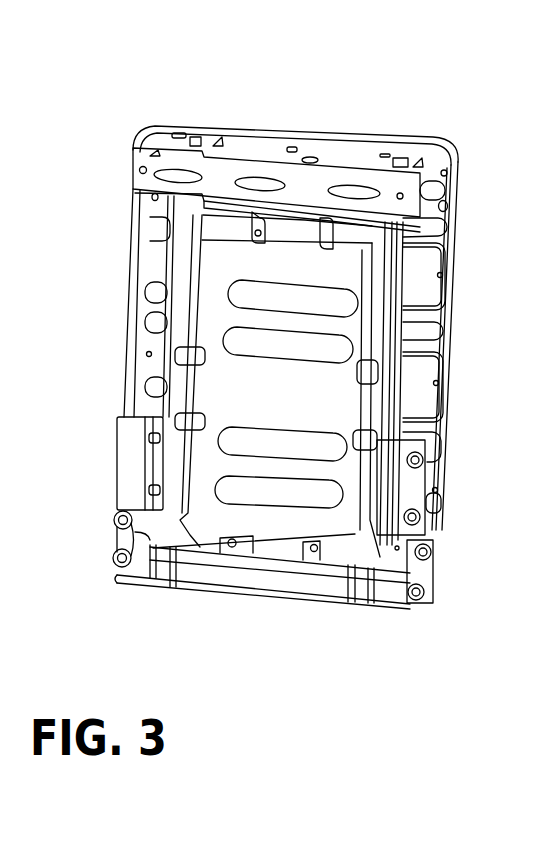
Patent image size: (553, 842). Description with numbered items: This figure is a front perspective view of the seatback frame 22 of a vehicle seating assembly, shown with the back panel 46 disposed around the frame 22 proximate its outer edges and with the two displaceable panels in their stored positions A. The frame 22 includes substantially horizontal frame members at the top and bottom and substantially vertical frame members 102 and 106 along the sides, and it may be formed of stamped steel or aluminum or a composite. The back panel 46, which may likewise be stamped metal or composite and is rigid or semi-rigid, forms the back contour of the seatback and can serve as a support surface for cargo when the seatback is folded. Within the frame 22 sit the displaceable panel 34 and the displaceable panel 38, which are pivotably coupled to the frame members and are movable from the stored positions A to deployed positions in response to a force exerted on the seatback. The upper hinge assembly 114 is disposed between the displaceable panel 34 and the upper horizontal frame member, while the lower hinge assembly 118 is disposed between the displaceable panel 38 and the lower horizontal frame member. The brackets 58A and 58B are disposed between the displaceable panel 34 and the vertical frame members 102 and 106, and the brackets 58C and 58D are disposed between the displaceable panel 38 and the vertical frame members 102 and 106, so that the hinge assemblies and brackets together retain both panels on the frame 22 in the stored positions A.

The frame 22 is at (395, 322).
The displaceable panel 34 is at (207, 243).
The displaceable panel 38 is at (200, 470).
The back panel 46 is at (383, 242).
The bracket 58A is at (178, 357).
The bracket 58B is at (380, 375).
The bracket 58C is at (180, 420).
The bracket 58D is at (363, 440).
The frame member 102 is at (178, 228).
The frame member 106 is at (383, 243).
The upper hinge assembly 114 is at (249, 210).
The lower hinge assembly 118 is at (218, 540).
The stored positions A is at (347, 236).